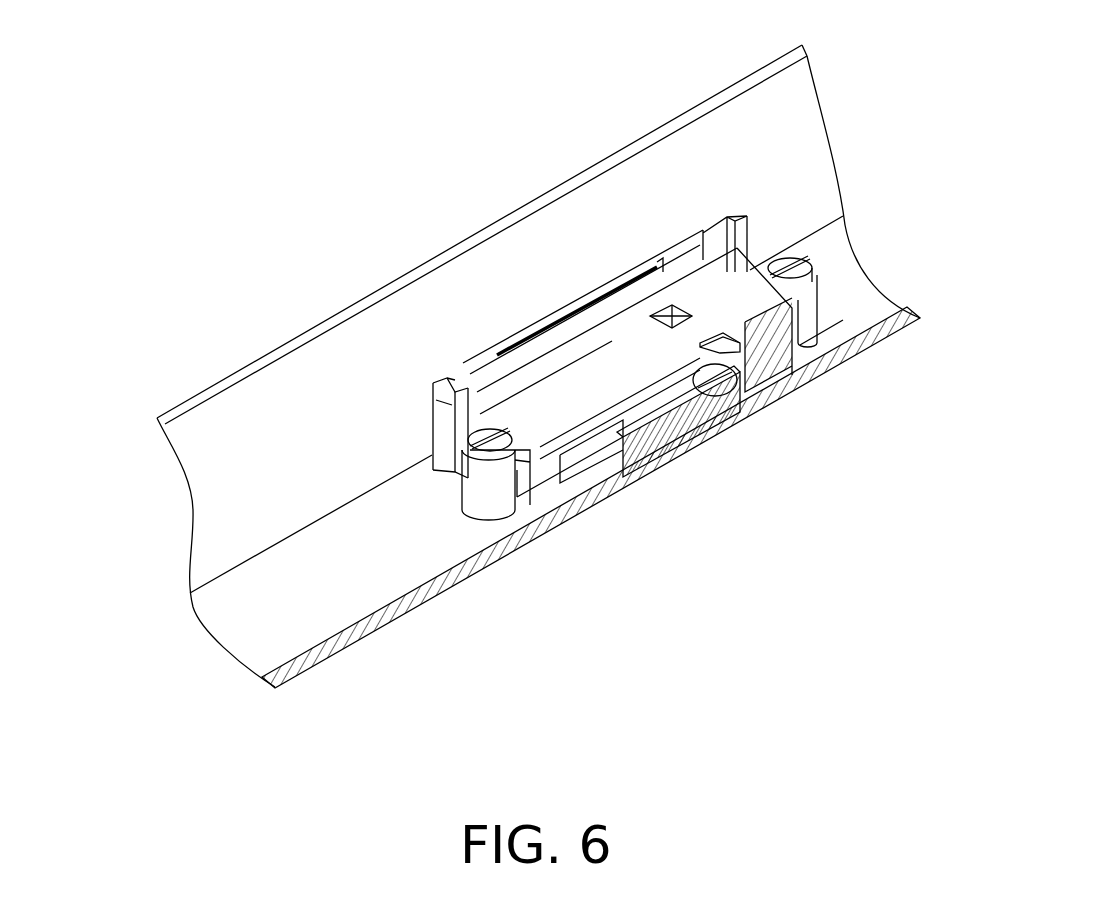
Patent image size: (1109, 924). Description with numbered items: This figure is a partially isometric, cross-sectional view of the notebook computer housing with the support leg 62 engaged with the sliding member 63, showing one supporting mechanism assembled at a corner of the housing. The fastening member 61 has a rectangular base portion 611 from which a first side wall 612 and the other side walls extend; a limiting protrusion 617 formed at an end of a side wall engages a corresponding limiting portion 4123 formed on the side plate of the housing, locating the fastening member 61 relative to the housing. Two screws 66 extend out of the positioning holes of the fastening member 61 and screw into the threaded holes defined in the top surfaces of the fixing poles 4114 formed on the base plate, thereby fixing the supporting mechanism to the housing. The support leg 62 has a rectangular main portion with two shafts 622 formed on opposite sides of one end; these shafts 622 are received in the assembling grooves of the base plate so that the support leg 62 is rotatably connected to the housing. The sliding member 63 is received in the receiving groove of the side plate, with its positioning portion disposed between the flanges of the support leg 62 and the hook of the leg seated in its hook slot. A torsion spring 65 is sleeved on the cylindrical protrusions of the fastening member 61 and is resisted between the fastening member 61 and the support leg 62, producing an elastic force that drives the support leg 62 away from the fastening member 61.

The fastening member 61 is at (803, 362).
The base portion 611 is at (360, 575).
The first side wall 612 is at (258, 412).
The limiting protrusion 617 is at (450, 377).
The support leg 62 is at (655, 435).
The shaft 622 is at (747, 412).
The sliding member 63 is at (583, 460).
The torsion spring 65 is at (700, 413).
The screw 66 is at (808, 262).
The fixing pole 4114 is at (815, 312).
The limiting portion 4123 is at (445, 405).